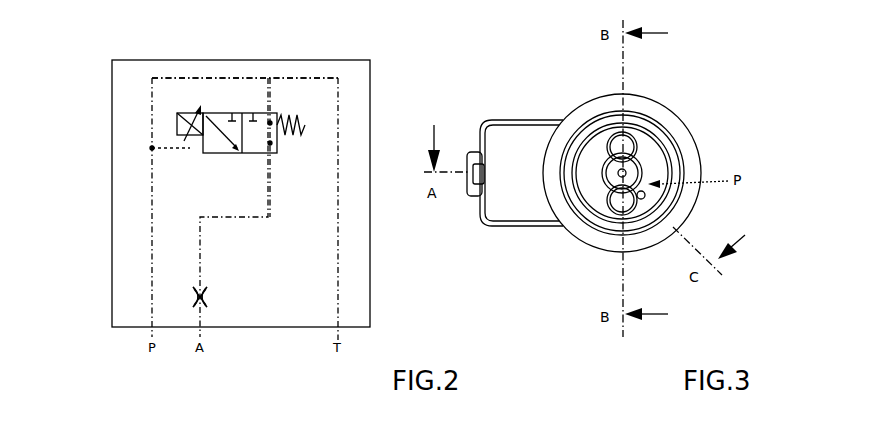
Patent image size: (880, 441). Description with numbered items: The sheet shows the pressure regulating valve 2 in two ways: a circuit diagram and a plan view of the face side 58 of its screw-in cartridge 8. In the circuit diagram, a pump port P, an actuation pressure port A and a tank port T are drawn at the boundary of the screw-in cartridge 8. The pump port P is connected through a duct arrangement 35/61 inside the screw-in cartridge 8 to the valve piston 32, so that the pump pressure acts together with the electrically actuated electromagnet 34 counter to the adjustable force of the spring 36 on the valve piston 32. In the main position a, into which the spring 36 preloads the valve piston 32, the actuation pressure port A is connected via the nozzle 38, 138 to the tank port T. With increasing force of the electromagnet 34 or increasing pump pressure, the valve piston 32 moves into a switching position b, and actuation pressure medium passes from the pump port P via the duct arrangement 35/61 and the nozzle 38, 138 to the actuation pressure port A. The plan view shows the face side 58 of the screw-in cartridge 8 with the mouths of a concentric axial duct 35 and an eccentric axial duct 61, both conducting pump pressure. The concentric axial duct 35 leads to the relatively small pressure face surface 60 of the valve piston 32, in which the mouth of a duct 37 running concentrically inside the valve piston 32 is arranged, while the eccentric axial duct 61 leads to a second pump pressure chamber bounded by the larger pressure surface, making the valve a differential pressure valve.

In FIG. 2, the pressure regulating valve 2 is at (96, 84).
In FIG. 2, the screw-in cartridge 8 is at (112, 186).
In FIG. 2, the valve piston 32 is at (228, 156).
In FIG. 2, the electromagnet 34 is at (190, 118).
In FIG. 2, the concentric axial duct 35 is at (152, 240).
In FIG. 3, the concentric axial duct 35 is at (584, 224).
In FIG. 2, the spring 36 is at (295, 150).
In FIG. 3, the duct 37 is at (586, 128).
In FIG. 2, the nozzle 38 is at (208, 297).
In FIG. 2, the throttle 138 is at (200, 297).
In FIG. 3, the face side 58 is at (654, 160).
In FIG. 3, the pressure face surface 60 is at (617, 236).
In FIG. 3, the eccentric axial duct 61 is at (692, 194).